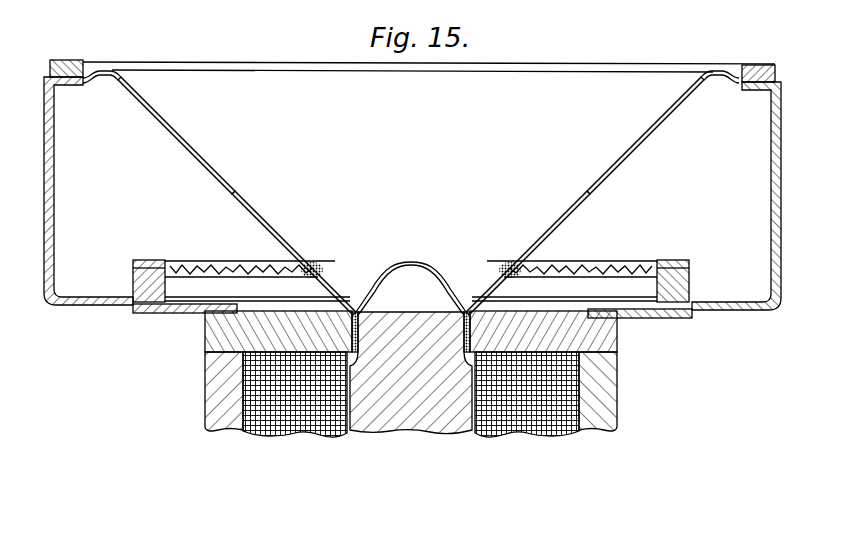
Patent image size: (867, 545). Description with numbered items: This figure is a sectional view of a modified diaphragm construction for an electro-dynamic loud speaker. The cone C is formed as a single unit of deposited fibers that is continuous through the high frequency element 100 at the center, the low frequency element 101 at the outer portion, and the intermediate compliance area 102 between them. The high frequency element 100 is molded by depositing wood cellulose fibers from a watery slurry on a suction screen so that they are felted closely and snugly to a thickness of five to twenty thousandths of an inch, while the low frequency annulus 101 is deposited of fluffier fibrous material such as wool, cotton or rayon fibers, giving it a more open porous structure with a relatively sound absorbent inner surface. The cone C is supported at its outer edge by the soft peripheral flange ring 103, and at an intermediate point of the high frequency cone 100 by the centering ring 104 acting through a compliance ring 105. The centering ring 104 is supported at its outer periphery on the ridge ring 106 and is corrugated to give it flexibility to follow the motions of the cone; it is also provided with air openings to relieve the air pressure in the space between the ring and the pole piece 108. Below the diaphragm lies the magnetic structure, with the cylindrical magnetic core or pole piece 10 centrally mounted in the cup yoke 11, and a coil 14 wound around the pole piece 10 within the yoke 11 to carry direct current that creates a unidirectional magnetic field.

The pole piece 10 is at (411, 373).
The cup yoke 11 is at (600, 392).
The coil 14 is at (287, 418).
The high frequency element 100 is at (351, 305).
The low frequency element 101 is at (189, 145).
The intermediate compliance area 102 is at (272, 228).
The soft peripheral flange ring 103 is at (88, 78).
The centering ring 104 is at (212, 264).
The compliance ring 105 is at (305, 270).
The ridge ring 106 is at (150, 282).
The pole piece 108 is at (411, 331).
The cone C is at (170, 121).